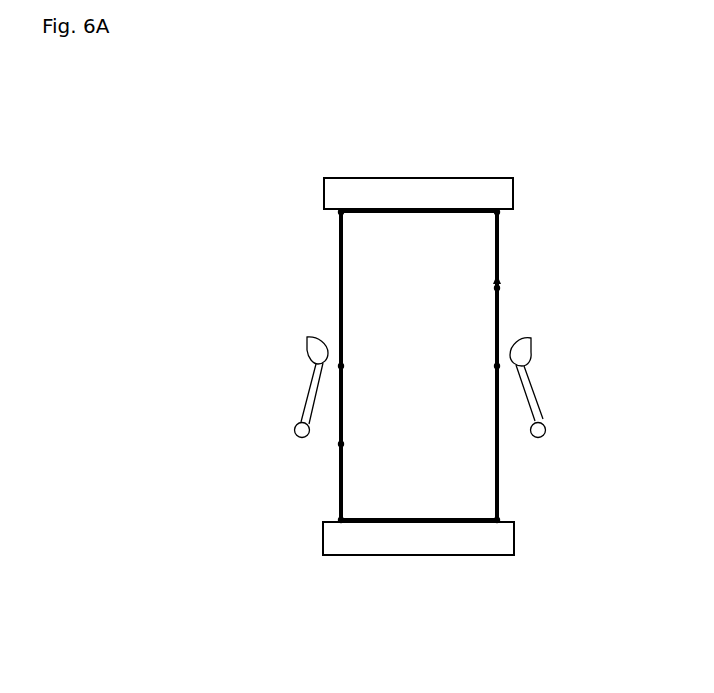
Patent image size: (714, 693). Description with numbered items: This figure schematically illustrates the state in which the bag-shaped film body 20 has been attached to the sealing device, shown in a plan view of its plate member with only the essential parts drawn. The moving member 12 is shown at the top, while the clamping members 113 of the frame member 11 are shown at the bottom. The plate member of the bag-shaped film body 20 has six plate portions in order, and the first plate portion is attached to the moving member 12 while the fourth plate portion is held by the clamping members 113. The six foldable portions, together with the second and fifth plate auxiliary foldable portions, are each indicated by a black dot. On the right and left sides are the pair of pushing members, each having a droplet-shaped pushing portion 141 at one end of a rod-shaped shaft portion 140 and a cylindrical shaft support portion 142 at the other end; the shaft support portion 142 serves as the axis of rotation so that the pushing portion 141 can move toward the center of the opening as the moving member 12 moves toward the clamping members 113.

The moving member 12 is at (421, 178).
The clamping member 113 is at (424, 557).
The frame member 11 is at (418, 583).
The bag-shaped film body 20 is at (325, 248).
The pushing portion 141 is at (306, 345).
The shaft portion 140 is at (309, 391).
The shaft support portion 142 is at (261, 427).